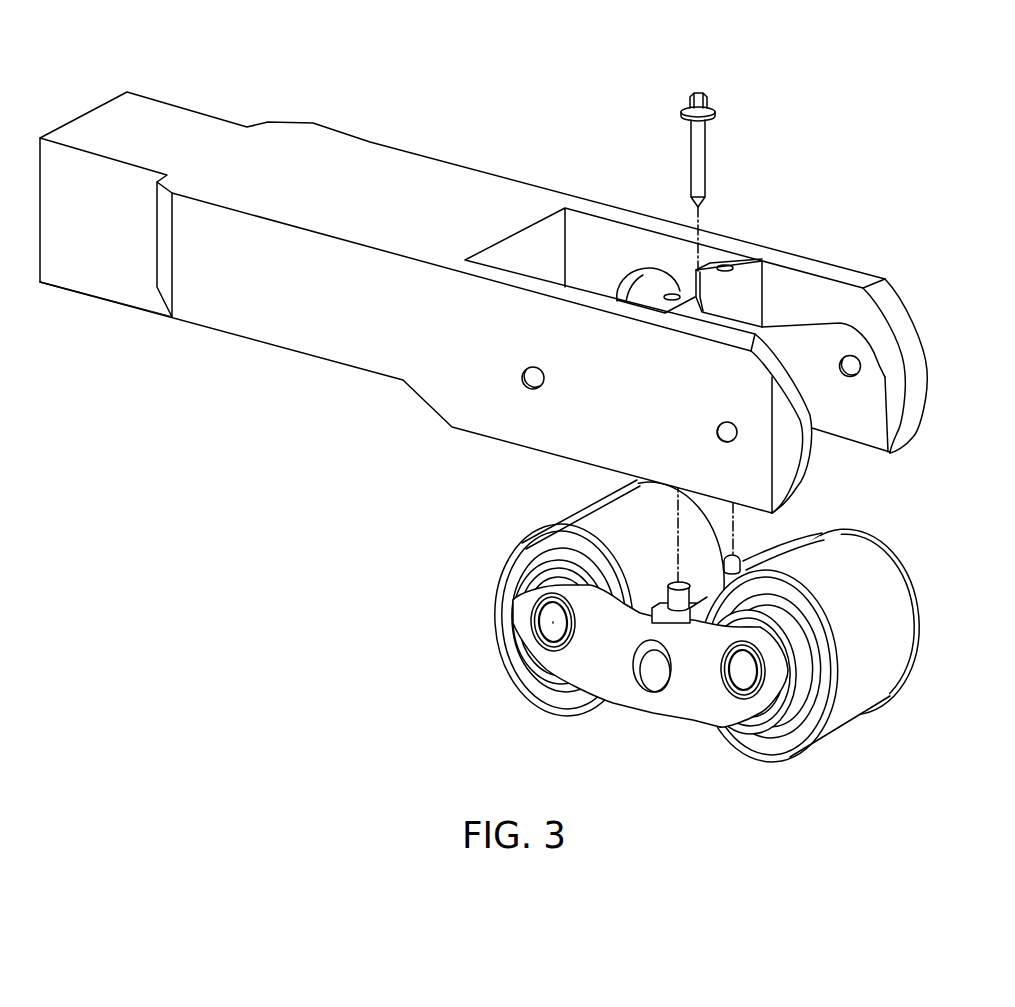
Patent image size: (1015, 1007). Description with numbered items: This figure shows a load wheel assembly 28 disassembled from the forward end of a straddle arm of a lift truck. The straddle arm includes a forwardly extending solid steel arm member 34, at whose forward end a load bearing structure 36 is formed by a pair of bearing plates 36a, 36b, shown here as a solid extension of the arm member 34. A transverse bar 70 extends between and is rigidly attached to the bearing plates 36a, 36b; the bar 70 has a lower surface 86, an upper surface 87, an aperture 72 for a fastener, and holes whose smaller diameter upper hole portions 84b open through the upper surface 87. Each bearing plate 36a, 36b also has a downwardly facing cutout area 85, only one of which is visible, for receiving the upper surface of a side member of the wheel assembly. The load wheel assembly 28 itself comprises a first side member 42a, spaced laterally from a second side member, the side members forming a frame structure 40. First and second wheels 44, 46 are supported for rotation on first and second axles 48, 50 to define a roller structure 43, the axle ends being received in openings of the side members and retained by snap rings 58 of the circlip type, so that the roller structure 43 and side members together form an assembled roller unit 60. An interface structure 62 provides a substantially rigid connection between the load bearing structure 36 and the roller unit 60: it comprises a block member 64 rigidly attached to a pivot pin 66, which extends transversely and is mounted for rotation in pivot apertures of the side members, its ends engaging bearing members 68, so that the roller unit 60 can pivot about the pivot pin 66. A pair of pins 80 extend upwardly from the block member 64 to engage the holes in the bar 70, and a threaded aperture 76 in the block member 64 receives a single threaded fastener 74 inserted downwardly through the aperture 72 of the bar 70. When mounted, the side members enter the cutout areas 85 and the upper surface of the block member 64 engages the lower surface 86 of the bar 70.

The load wheel assembly 28 is at (910, 526).
The arm member 34 is at (203, 128).
The load bearing structure 36 is at (839, 236).
The bearing plate 36a is at (470, 425).
The bearing plate 36b is at (900, 293).
The frame structure 40 is at (643, 731).
The first side member 42a is at (693, 718).
The roller structure 43 is at (936, 612).
The first wheel 44 is at (864, 719).
The second wheel 46 is at (503, 652).
The first axle 48 is at (752, 684).
The second axle 50 is at (557, 633).
The snap ring 58 is at (540, 636).
The assembled roller unit 60 is at (727, 745).
The interface structure 62 is at (750, 543).
The block member 64 is at (659, 597).
The pivot pin 66 is at (648, 686).
The bearing member 68 is at (652, 680).
The transverse bar 70 is at (750, 277).
The aperture 72 is at (702, 297).
The threaded fastener 74 is at (710, 95).
The threaded aperture 76 is at (684, 600).
The pin 80 is at (800, 538).
The upper hole portion 84b is at (670, 293).
The cutout area 85 is at (861, 368).
The lower surface 86 is at (758, 327).
The upper surface 87 is at (655, 303).